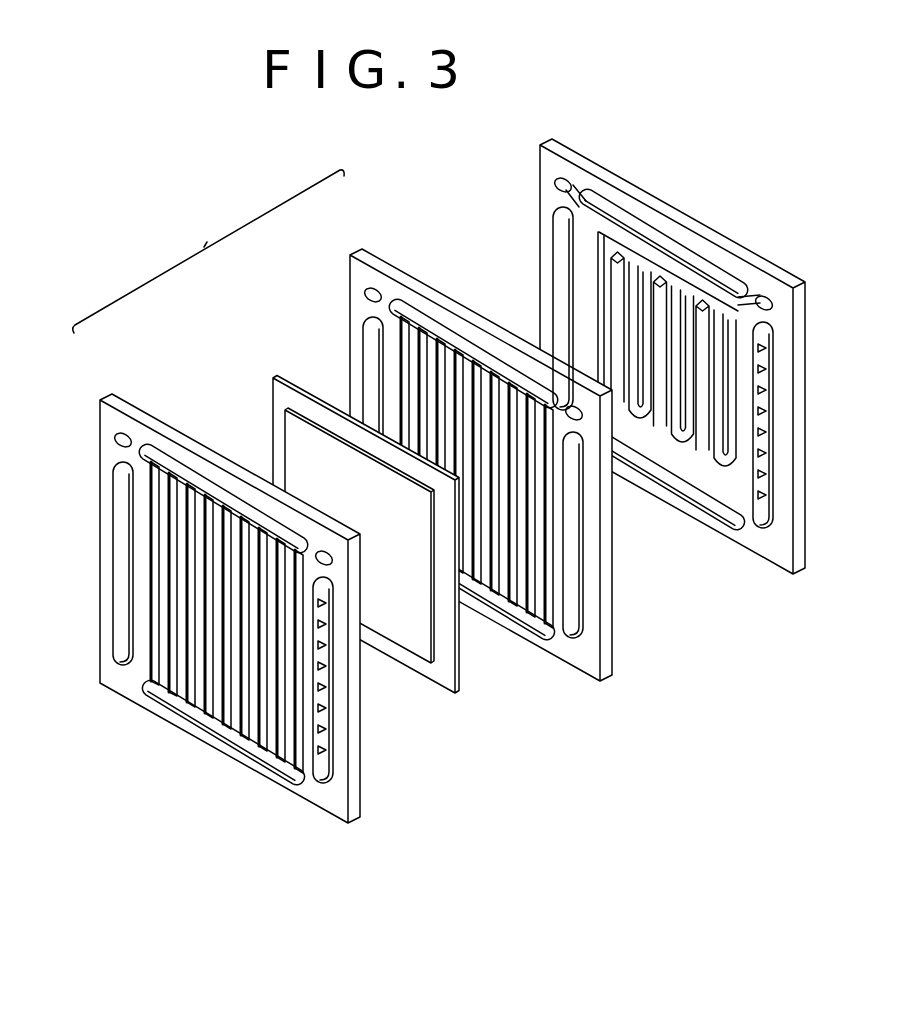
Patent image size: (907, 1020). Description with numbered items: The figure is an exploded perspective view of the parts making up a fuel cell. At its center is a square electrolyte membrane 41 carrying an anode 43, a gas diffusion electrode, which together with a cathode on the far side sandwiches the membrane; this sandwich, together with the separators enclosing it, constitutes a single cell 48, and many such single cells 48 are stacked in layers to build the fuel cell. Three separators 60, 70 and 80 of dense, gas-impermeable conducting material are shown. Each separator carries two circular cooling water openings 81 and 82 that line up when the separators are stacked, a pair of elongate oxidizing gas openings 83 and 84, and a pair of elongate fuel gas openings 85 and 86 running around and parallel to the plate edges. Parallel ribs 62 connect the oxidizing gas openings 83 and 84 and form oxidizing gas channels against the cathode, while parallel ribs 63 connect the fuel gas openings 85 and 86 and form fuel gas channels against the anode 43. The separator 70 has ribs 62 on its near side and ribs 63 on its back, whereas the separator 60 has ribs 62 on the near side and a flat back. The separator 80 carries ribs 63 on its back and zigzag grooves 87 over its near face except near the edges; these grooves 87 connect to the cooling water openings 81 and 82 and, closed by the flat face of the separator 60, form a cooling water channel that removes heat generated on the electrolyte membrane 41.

The electrolyte membrane 41 is at (287, 377).
The anode 43 is at (292, 432).
The single cell 48 is at (208, 251).
The separator 60 is at (368, 262).
The ribs 62 is at (522, 586).
The ribs 63 is at (772, 466).
The separator 70 is at (112, 402).
The separator 80 is at (565, 155).
The cooling water opening 81 is at (556, 181).
The cooling water opening 82 is at (771, 305).
The oxidizing gas opening 83 is at (632, 224).
The oxidizing gas opening 84 is at (712, 500).
The fuel gas opening 85 is at (562, 304).
The fuel gas opening 86 is at (772, 409).
The zigzag grooves 87 is at (650, 268).